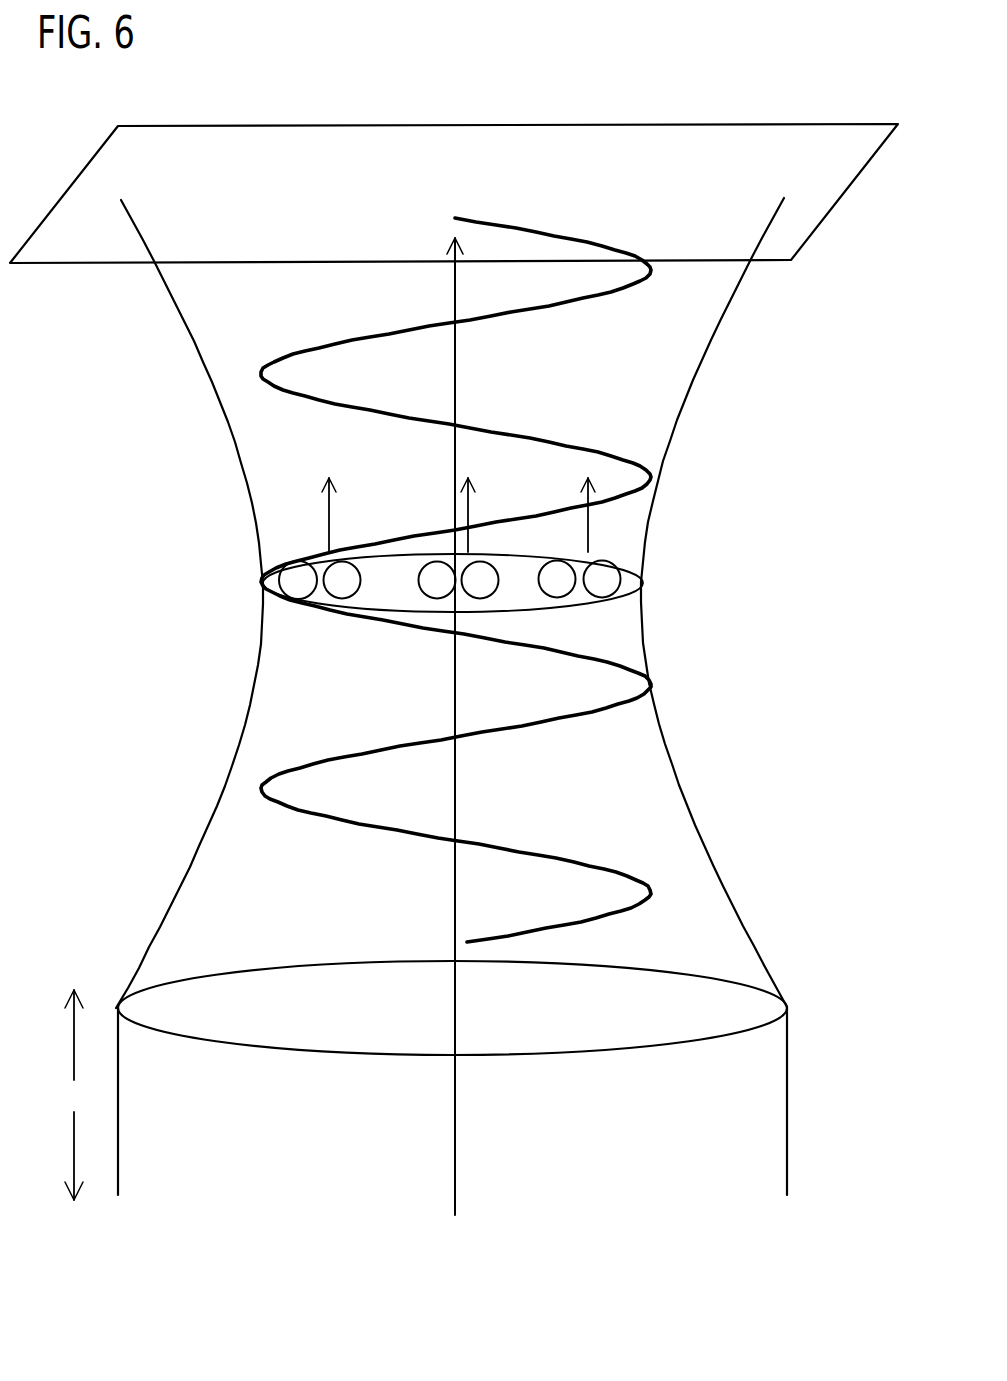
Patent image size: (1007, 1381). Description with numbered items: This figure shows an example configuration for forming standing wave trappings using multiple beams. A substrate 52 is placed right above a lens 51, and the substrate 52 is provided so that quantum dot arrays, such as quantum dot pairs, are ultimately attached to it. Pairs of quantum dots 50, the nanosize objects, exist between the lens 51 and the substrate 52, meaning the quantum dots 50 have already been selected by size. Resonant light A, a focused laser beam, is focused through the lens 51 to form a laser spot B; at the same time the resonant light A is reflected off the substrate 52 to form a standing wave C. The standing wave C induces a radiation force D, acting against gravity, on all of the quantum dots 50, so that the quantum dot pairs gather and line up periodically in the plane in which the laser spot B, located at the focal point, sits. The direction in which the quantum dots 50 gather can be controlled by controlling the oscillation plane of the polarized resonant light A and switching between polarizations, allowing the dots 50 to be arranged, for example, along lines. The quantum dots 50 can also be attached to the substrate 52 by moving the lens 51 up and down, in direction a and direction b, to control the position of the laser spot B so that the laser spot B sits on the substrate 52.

The quantum dots 50 is at (328, 572).
The lens 51 is at (627, 1053).
The substrate 52 is at (750, 124).
The resonant light A is at (693, 812).
The laser spot B is at (572, 607).
The standing wave C is at (575, 717).
The radiation force D is at (327, 518).
The direction a is at (63, 1035).
The direction b is at (63, 1156).